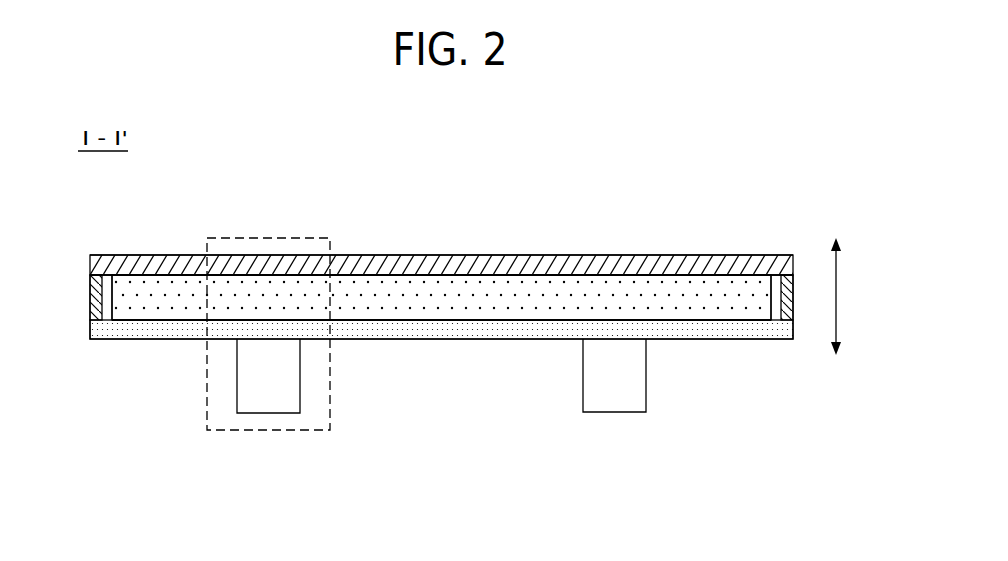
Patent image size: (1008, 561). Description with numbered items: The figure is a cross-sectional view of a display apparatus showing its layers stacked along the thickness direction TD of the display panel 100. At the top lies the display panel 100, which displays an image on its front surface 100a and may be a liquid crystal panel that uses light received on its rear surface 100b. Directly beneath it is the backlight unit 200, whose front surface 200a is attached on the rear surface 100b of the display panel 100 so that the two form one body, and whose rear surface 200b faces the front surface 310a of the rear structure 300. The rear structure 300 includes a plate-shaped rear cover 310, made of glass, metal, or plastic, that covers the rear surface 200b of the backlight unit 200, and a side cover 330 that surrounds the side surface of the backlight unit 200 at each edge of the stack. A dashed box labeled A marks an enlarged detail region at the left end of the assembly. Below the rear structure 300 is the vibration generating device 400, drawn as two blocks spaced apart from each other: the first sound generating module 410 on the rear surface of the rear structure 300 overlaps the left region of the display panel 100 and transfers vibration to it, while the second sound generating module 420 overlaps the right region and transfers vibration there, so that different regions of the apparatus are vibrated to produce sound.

The display panel 100 is at (245, 270).
The front surface 100a is at (625, 255).
The rear surface 100b is at (702, 280).
The backlight unit 200 is at (305, 290).
The front surface 200a is at (413, 275).
The rear surface 200b is at (473, 308).
The rear structure 300 is at (60, 401).
The rear cover 310 is at (108, 327).
The front surface 310a is at (165, 318).
The side cover 330 is at (89, 297).
The vibration generating device 400 is at (283, 480).
The first sound generating module 410 is at (277, 400).
The second sound generating module 420 is at (612, 400).
The region A is at (207, 238).
The thickness direction TD is at (851, 296).